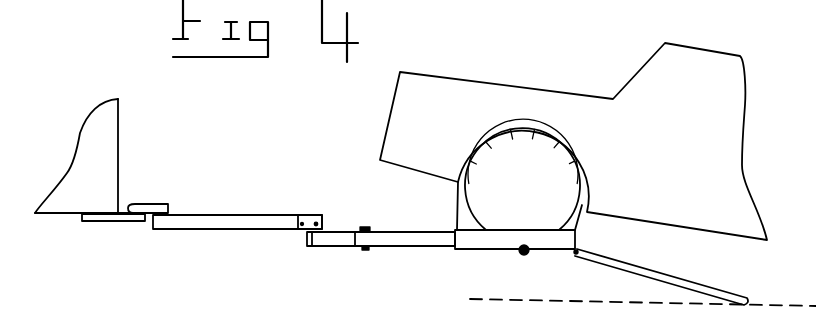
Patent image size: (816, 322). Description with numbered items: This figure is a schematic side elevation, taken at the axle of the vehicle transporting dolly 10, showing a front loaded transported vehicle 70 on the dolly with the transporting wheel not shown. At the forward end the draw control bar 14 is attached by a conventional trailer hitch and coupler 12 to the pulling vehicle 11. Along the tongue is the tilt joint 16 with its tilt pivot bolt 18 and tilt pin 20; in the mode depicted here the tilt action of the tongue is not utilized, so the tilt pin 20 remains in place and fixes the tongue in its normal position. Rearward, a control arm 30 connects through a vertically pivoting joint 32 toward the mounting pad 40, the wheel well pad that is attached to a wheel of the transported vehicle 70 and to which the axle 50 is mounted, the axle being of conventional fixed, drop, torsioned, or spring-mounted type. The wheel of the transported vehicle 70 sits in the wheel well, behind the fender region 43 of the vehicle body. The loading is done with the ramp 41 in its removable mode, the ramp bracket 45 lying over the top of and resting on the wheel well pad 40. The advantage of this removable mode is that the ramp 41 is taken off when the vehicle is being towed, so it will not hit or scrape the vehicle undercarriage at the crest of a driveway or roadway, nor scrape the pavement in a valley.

The carrier assembly 10 is at (304, 139).
The pulling vehicle 11 is at (110, 168).
The trailer hitch and coupler 12 is at (154, 205).
The draw control bar 14 is at (240, 215).
The tilt joint 16 is at (329, 196).
The tilt pivot bolt 18 is at (298, 228).
The tilt pin 20 is at (312, 241).
The control arm 30 is at (400, 232).
The vertically pivoting joint 32 is at (362, 229).
The mounting pad 40 is at (467, 249).
The ramp 41 is at (661, 277).
The fender skirt 43 is at (578, 225).
The ramp bracket 45 is at (576, 254).
The axle 50 is at (523, 251).
The transported vehicle 70 is at (396, 120).